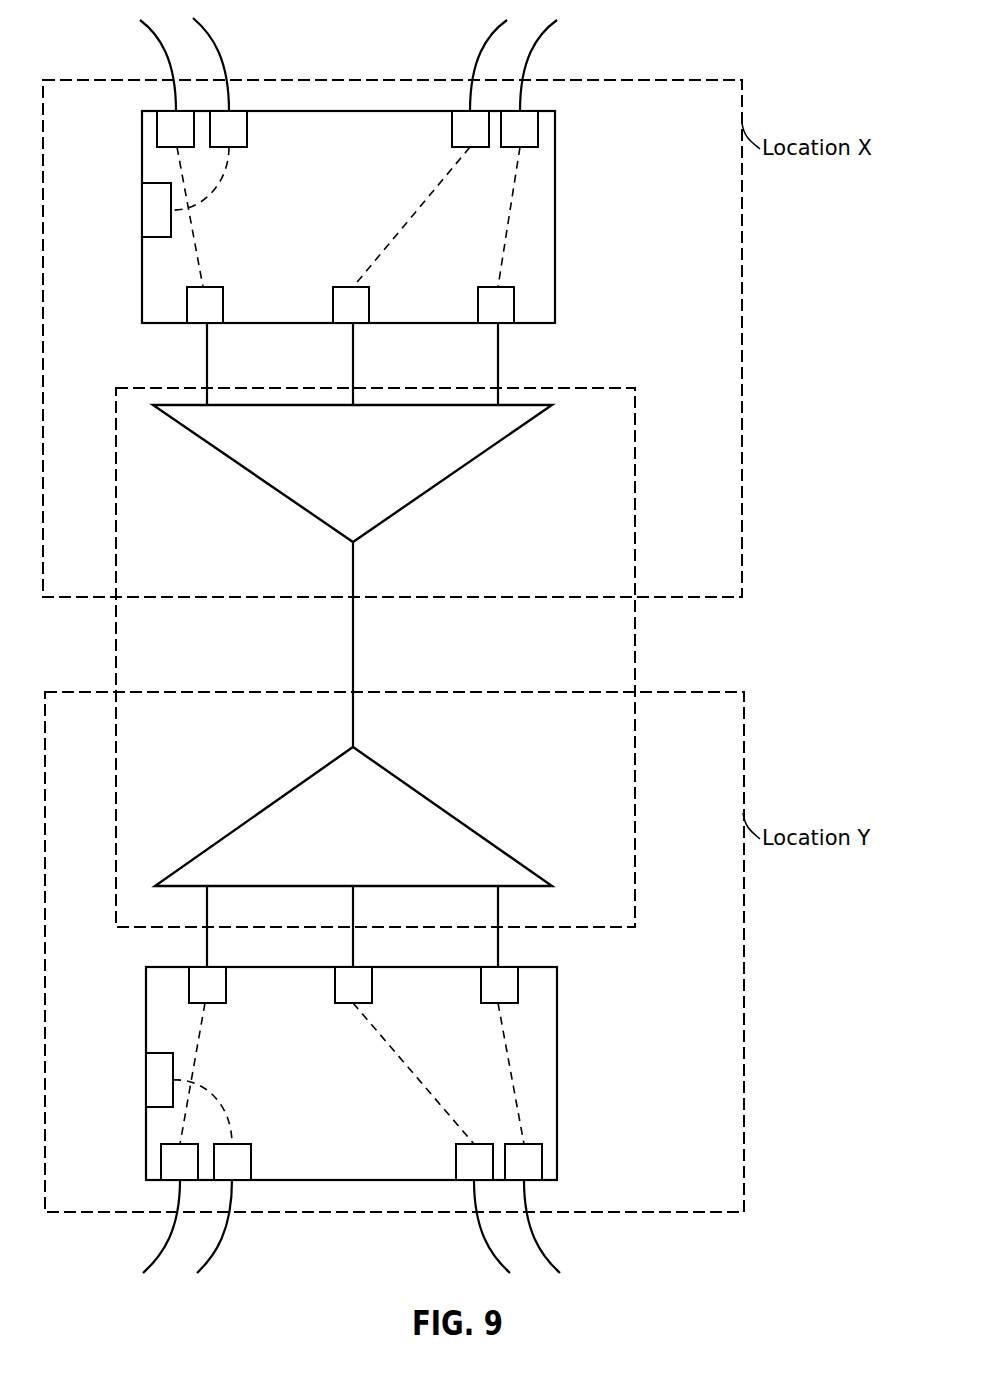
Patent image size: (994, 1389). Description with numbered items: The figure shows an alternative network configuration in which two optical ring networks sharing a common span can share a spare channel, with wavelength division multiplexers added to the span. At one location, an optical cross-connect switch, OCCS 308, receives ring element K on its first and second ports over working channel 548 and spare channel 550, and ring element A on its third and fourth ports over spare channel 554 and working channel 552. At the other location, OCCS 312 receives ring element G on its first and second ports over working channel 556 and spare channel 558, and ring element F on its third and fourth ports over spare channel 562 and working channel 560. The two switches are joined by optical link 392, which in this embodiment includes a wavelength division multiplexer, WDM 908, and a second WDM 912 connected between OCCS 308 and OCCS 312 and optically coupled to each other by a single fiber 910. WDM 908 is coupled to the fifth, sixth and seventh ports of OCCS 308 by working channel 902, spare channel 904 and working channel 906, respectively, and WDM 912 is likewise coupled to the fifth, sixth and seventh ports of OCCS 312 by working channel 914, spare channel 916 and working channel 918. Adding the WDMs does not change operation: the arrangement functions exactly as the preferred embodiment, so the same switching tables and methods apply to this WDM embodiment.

The working channel 548 is at (155, 33).
The spare channel 550 is at (218, 38).
The working channel 552 is at (547, 30).
The spare channel 554 is at (473, 58).
The OCCS 308 is at (555, 210).
The working channel 902 is at (207, 372).
The spare channel 904 is at (353, 372).
The working channel 906 is at (498, 372).
The wavelength division multiplexer 908 is at (462, 468).
The fiber 910 is at (353, 618).
The optical link 392 is at (635, 623).
The wavelength division multiplexer 912 is at (443, 806).
The working channel 914 is at (207, 920).
The spare channel 916 is at (353, 920).
The working channel 918 is at (498, 920).
The OCCS 312 is at (557, 1068).
The working channel 556 is at (157, 1263).
The spare channel 558 is at (230, 1240).
The working channel 560 is at (480, 1244).
The spare channel 562 is at (548, 1262).